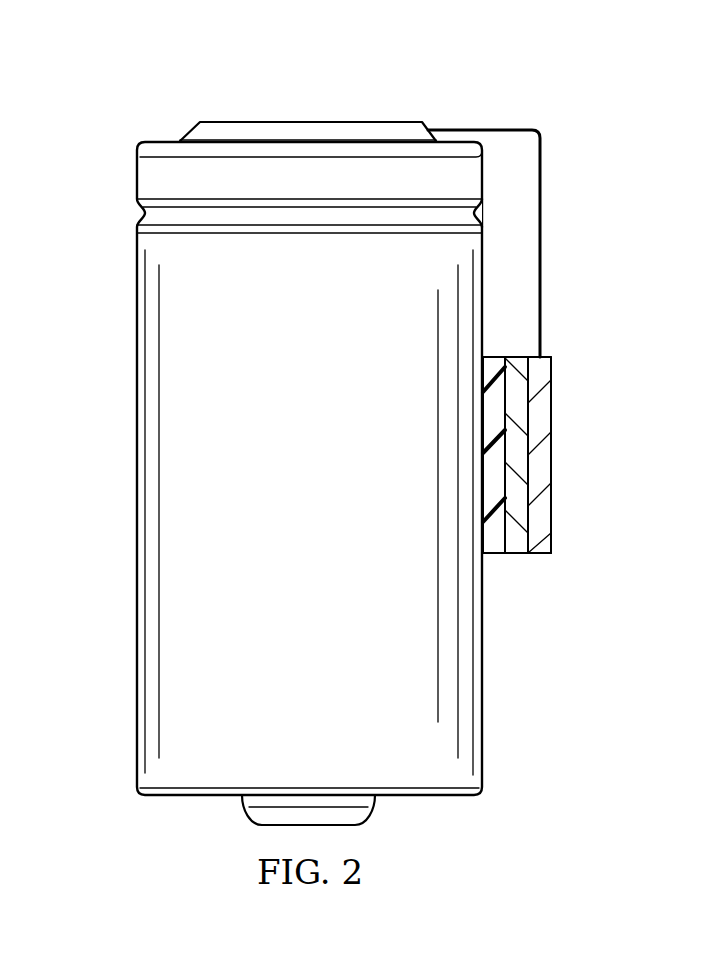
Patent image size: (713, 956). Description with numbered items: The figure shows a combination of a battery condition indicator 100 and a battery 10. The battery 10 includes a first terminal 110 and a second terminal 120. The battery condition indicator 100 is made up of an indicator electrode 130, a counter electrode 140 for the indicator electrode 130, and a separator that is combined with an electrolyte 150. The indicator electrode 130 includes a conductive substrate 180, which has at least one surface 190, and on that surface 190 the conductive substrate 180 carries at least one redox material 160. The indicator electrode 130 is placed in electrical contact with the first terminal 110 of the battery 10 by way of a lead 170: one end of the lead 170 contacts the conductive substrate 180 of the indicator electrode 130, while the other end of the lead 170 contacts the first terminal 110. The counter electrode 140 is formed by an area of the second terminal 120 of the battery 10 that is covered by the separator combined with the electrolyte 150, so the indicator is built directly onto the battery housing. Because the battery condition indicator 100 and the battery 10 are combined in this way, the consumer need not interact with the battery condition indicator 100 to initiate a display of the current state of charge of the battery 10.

The battery 10 is at (607, 129).
The battery condition indicator 100 is at (592, 329).
The first terminal 110 is at (312, 122).
The second terminal 120 is at (484, 700).
The indicator electrode 130 is at (640, 352).
The counter electrode 140 is at (483, 428).
The separator combined with an electrolyte 150 is at (496, 546).
The redox material 160 is at (517, 413).
The lead 170 is at (540, 246).
The conductive substrate 180 is at (540, 465).
The surface 190 is at (522, 547).